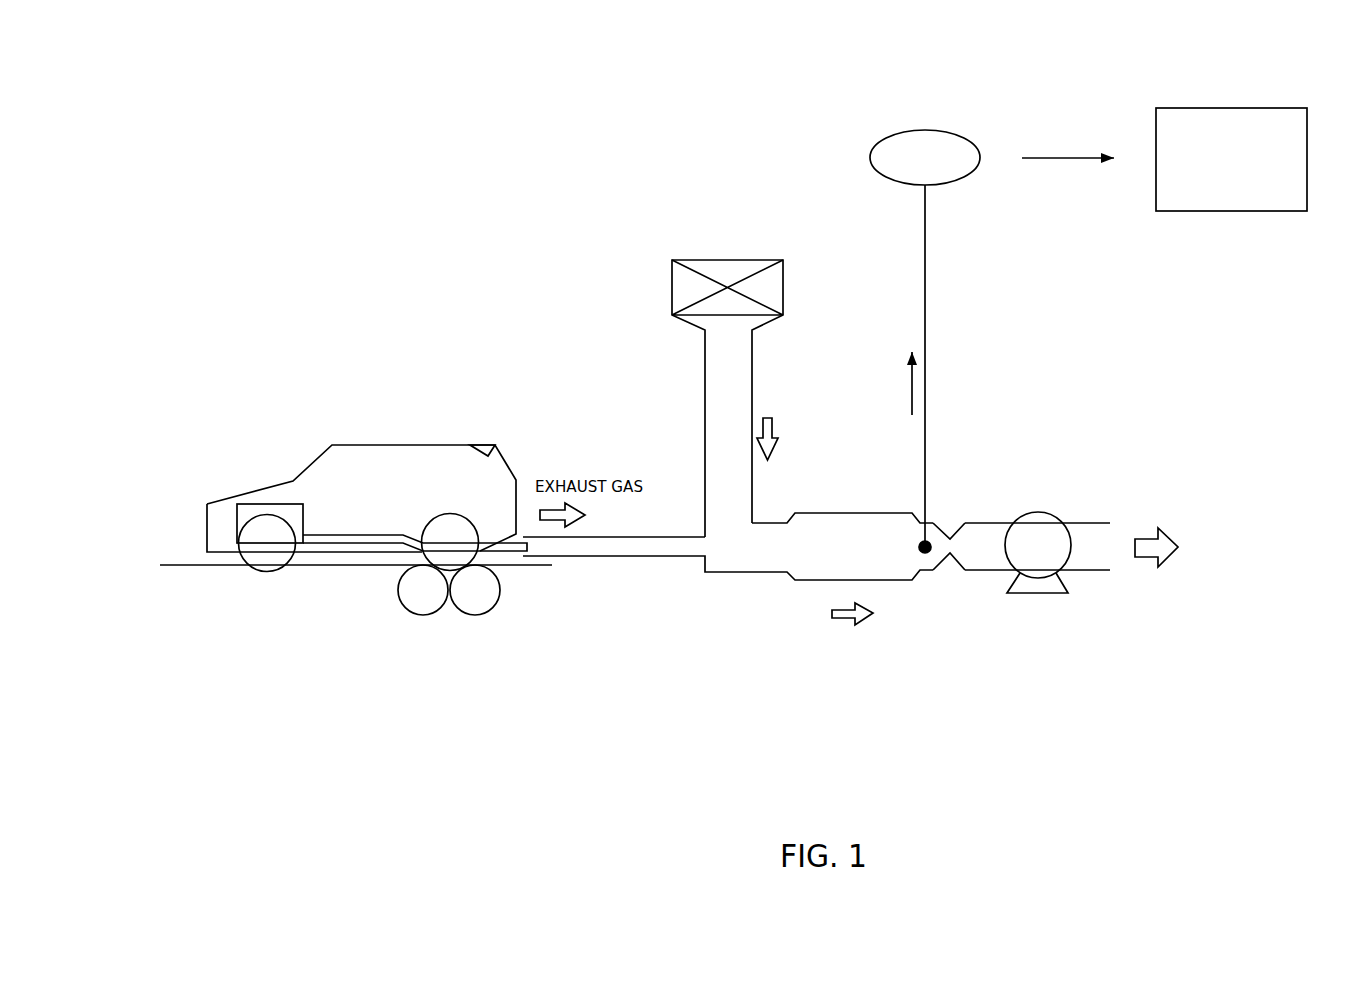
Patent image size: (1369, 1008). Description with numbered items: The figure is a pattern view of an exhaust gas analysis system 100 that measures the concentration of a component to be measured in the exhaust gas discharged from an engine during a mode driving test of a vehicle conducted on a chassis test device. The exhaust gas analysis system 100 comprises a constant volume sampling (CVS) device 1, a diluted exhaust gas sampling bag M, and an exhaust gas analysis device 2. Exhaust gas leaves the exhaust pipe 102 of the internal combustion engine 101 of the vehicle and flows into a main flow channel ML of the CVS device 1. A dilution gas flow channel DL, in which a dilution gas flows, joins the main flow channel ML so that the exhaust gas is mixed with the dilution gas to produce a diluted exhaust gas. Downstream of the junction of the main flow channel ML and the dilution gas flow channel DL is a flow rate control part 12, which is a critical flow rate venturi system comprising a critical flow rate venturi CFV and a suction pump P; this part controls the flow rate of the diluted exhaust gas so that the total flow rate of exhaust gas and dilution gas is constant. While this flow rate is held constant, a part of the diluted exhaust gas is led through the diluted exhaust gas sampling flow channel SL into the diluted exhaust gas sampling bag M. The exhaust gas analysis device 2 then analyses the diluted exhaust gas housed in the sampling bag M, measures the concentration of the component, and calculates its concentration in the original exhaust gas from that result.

The exhaust gas analysis system 100 is at (556, 160).
The internal combustion engine 101 is at (250, 504).
The exhaust pipe 102 is at (392, 533).
The constant volume sampling (CVS) device 1 is at (878, 708).
The exhaust gas analysis device 2 is at (1282, 108).
The flow rate control part 12 is at (1093, 423).
The critical flow rate venturi CFV is at (951, 522).
The suction pump P is at (1040, 512).
The dilution gas flow channel DL is at (705, 393).
The main flow channel ML is at (660, 557).
The diluted exhaust gas sampling flow channel SL is at (928, 312).
The diluted exhaust gas sampling bag M is at (960, 182).